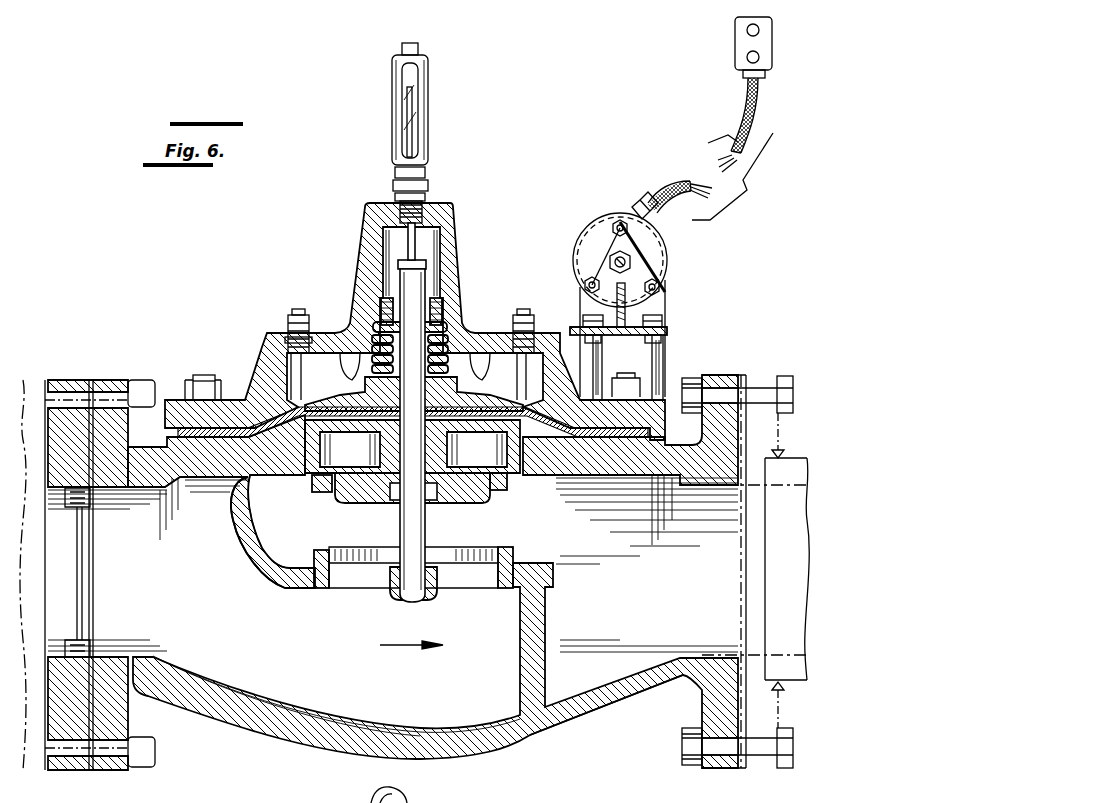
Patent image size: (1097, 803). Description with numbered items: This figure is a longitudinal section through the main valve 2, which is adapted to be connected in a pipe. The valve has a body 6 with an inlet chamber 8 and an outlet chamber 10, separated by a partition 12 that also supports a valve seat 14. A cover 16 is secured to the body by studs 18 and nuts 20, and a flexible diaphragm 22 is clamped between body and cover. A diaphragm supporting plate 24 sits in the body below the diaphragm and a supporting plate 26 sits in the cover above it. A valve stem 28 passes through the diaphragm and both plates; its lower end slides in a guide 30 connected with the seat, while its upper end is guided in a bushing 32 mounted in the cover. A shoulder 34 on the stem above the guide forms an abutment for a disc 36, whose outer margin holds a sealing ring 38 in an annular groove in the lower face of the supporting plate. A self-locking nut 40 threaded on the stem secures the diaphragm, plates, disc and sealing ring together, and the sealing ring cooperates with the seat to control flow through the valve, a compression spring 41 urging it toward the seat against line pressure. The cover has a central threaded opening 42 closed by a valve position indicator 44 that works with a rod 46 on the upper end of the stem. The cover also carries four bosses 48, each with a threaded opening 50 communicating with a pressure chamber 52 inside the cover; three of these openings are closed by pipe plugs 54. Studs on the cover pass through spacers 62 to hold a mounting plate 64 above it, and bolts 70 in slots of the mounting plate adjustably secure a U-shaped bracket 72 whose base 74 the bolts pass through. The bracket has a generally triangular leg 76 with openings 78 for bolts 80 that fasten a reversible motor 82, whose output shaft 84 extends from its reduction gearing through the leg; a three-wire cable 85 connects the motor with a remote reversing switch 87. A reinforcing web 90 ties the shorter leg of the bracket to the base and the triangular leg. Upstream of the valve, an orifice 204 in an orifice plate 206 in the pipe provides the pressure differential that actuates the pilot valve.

The main valve 2 is at (250, 731).
The body 6 is at (590, 713).
The inlet chamber 8 is at (195, 614).
The outlet chamber 10 is at (620, 581).
The partition 12 is at (240, 543).
The valve seat 14 is at (505, 547).
The cover 16 is at (170, 400).
The studs 18 is at (203, 375).
The nuts 20 is at (219, 385).
The flexible diaphragm 22 is at (574, 440).
The diaphragm supporting plate 24 is at (322, 445).
The supporting plate 26 is at (496, 397).
The valve stem 28 is at (402, 541).
The guide 30 is at (392, 586).
The bushing 32 is at (444, 305).
The shoulder 34 is at (434, 500).
The disc 36 is at (345, 505).
The sealing ring 38 is at (316, 492).
The self-locking nut 40 is at (372, 360).
The compression spring 41 is at (451, 325).
The central threaded opening 42 is at (424, 212).
The valve position indicator 44 is at (429, 118).
The rod 46 is at (418, 131).
The bosses 48 is at (256, 347).
The threaded opening 50 is at (284, 342).
The pressure chamber 52 is at (305, 337).
The pipe plugs 54 is at (296, 309).
The spacers 62 is at (600, 378).
The mounting plate 64 is at (668, 331).
The bolts 70 is at (658, 295).
The bracket 72 is at (673, 310).
The base 74 is at (586, 328).
The triangular leg 76 is at (589, 251).
The openings 78 is at (370, 800).
The bolts 80 is at (618, 220).
The reversible motor 82 is at (606, 233).
The output shaft 84 is at (633, 262).
The 3-wire cable 85 is at (680, 181).
The remote reversing switch 87 is at (737, 42).
The reinforcing web 90 is at (628, 289).
The orifice 204 is at (84, 508).
The orifice plate 206 is at (80, 380).